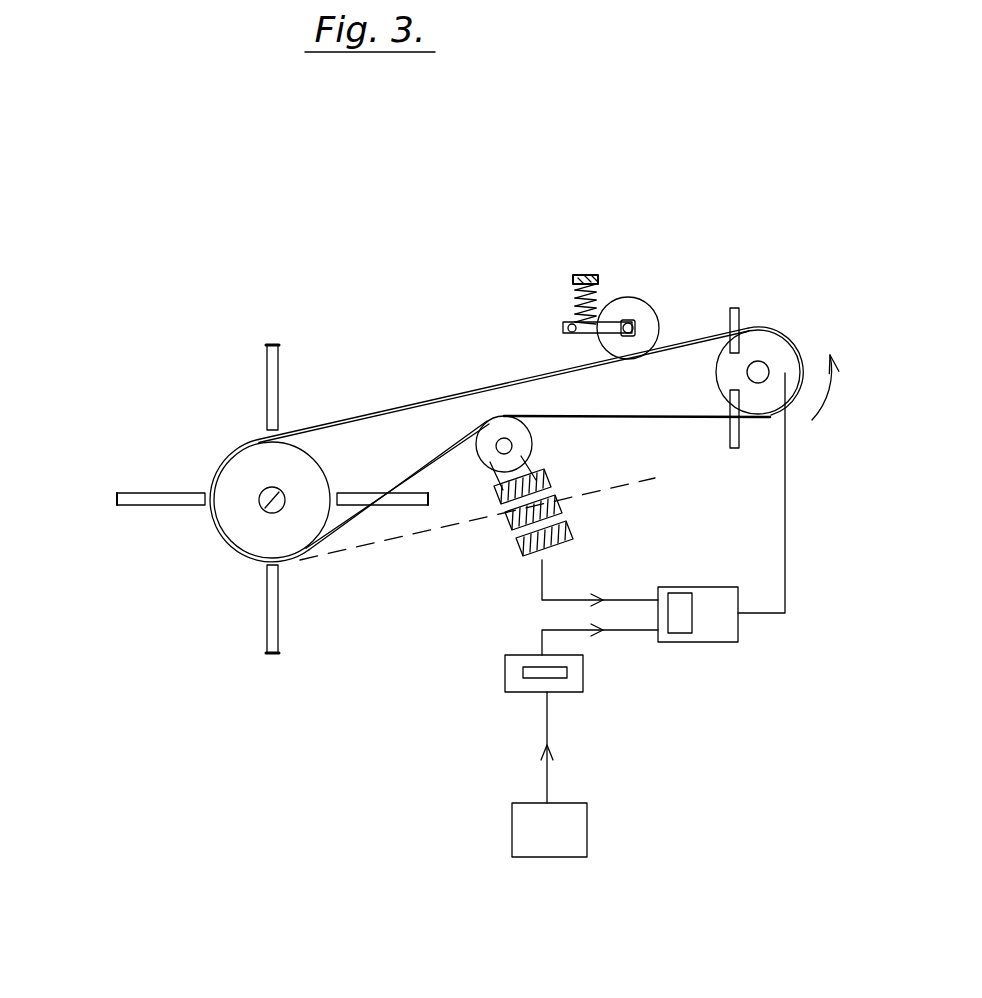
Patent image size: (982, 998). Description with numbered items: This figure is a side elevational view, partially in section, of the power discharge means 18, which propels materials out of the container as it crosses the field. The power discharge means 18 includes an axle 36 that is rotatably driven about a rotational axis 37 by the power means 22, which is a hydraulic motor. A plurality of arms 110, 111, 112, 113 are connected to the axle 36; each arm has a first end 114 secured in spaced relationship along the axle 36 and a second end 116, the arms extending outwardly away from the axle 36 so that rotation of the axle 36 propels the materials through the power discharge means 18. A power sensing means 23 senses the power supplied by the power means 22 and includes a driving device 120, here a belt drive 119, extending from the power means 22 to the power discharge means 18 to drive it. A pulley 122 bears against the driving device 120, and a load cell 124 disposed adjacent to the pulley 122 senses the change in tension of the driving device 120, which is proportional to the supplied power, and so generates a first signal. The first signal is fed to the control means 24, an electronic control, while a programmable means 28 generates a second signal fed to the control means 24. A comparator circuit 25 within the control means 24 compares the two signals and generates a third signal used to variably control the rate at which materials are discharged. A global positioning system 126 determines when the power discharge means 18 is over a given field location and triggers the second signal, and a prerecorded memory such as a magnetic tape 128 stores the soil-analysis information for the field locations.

The power discharge means 18 is at (150, 425).
The axle 36 is at (267, 487).
The rotational axis 37 is at (270, 502).
The arm 110 is at (270, 380).
The second end 116 is at (278, 345).
The arm 113 is at (178, 500).
The arm 111 is at (358, 498).
The arm 112 is at (270, 612).
The first end 114 is at (278, 420).
The belt drive 119 is at (423, 393).
The driving device 120 is at (688, 328).
The power means 22 is at (777, 345).
The pulley 122 is at (514, 420).
The load cell 124 is at (508, 537).
The power sensing means 23 is at (458, 537).
The control means 24 is at (755, 633).
The comparator circuit 25 is at (680, 617).
The magnetic tape 128 is at (542, 672).
The programmable means 28 is at (527, 700).
The global positioning system 126 is at (577, 833).